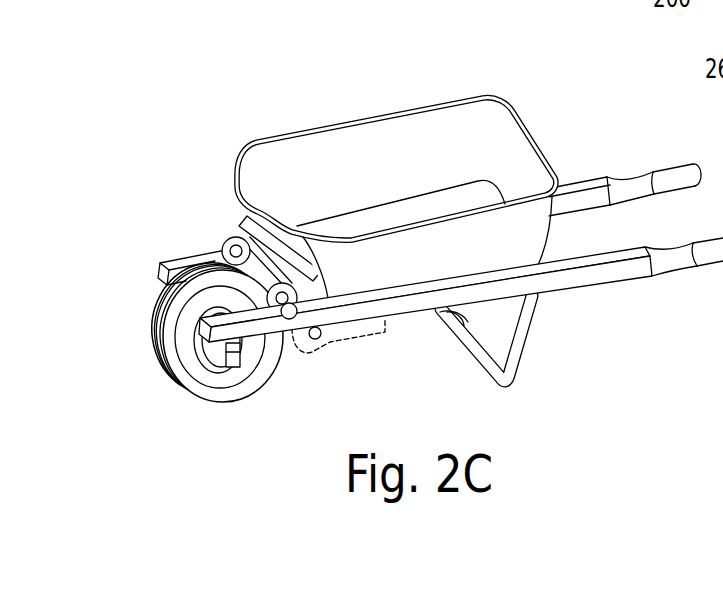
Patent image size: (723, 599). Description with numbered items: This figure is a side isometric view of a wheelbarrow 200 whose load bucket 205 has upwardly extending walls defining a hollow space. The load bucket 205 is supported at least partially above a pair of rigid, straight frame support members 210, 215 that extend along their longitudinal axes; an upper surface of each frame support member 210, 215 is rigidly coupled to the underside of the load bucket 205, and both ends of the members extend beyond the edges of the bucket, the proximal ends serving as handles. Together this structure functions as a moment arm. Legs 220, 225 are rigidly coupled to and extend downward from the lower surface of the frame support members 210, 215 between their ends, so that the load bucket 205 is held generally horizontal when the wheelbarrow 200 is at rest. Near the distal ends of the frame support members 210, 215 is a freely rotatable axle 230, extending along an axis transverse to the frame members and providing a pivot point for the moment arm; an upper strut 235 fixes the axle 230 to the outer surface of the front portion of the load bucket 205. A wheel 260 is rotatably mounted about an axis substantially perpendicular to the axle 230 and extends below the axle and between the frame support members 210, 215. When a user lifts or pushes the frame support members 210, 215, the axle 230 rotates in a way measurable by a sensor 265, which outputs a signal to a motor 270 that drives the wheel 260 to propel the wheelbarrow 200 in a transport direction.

The wheelbarrow 200 is at (133, 90).
The load bucket 205 is at (419, 167).
The frame support member 210 is at (638, 277).
The frame support member 215 is at (592, 179).
The leg 220 is at (528, 355).
The leg 225 is at (472, 313).
The axle 230 is at (295, 320).
The upper strut 235 is at (243, 221).
The wheel 260 is at (150, 342).
The sensor 265 is at (238, 373).
The motor 270 is at (358, 340).